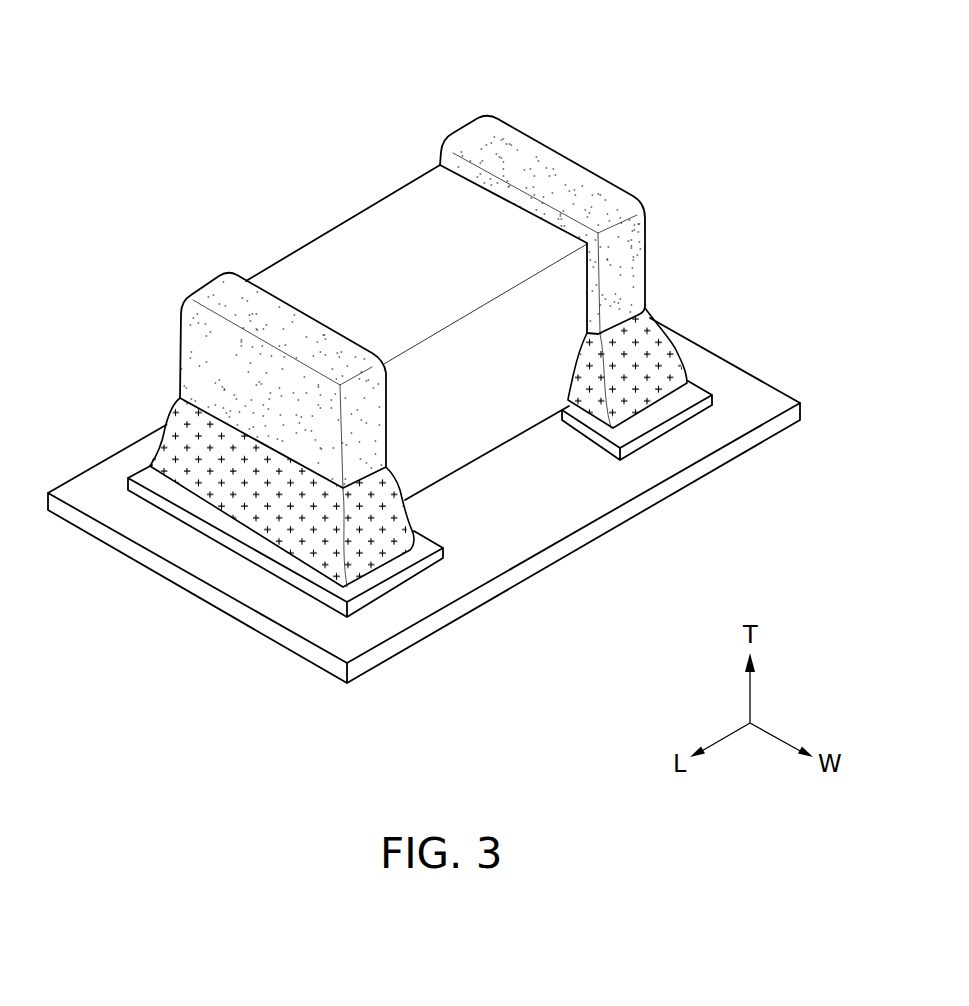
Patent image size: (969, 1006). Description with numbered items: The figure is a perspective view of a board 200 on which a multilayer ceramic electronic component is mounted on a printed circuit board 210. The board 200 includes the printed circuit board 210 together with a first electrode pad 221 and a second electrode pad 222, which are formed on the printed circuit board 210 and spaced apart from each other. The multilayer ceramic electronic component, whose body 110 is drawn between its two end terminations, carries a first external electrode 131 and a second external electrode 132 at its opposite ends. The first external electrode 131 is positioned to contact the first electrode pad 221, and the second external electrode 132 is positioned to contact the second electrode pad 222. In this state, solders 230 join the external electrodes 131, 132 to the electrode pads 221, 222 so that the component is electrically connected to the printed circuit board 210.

The board 200 is at (267, 52).
The body of multilayer capacitor 110 is at (348, 220).
The first external electrode 131 is at (208, 273).
The second external electrode 132 is at (470, 128).
The printed circuit board 210 is at (565, 548).
The first electrode pad 221 is at (407, 572).
The second electrode pad 222 is at (673, 413).
The solders 230 is at (373, 553).